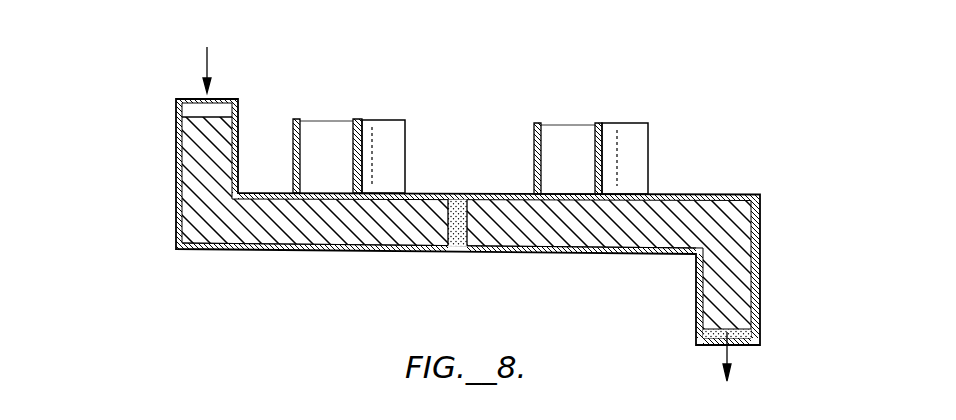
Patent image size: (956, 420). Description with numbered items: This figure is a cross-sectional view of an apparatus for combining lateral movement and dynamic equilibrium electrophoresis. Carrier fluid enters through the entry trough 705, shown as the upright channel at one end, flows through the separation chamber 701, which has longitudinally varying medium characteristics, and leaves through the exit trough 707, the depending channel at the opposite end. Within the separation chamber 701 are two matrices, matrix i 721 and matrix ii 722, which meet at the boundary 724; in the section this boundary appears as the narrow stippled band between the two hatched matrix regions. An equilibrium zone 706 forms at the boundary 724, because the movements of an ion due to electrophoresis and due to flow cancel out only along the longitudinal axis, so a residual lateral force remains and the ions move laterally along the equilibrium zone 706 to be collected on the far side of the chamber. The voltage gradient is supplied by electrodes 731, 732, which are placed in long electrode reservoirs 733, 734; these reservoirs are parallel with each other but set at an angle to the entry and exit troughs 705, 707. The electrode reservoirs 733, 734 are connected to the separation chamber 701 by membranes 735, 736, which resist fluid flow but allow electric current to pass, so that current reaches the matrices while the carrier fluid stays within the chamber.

The separation chamber 701 is at (410, 252).
The entry trough 705 is at (178, 158).
The equilibrium zone 706 is at (462, 238).
The exit trough 707 is at (762, 303).
The matrix i 721 is at (276, 233).
The matrix ii 722 is at (614, 232).
The boundary 724 is at (449, 232).
The electrode 731 is at (306, 133).
The electrode 732 is at (587, 134).
The electrode reservoir 733 is at (380, 128).
The electrode reservoir 734 is at (638, 137).
The membrane 735 is at (325, 192).
The membrane 736 is at (557, 194).